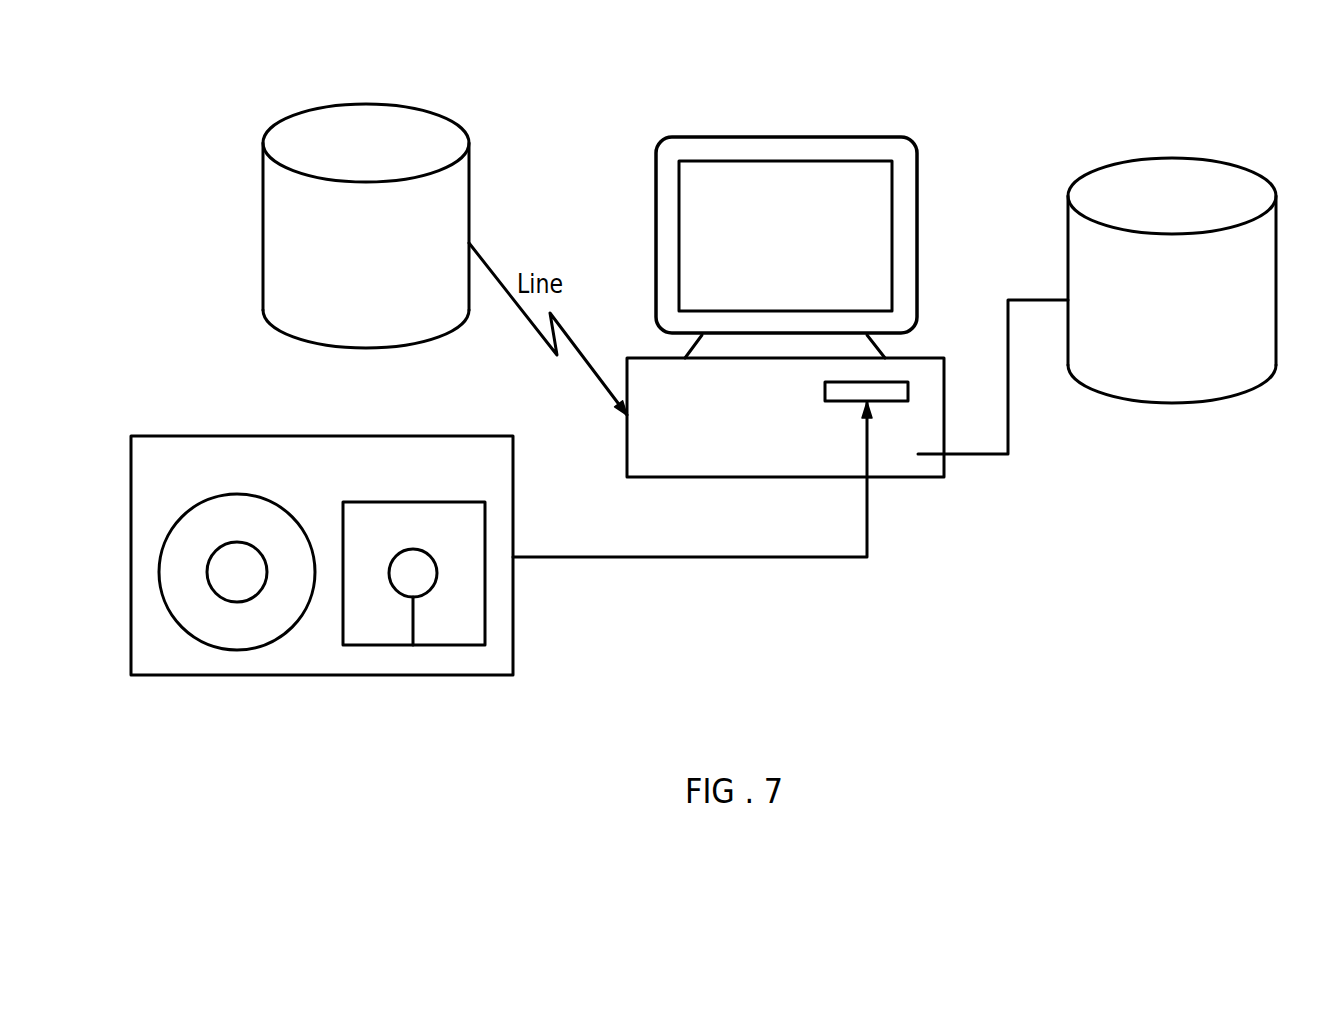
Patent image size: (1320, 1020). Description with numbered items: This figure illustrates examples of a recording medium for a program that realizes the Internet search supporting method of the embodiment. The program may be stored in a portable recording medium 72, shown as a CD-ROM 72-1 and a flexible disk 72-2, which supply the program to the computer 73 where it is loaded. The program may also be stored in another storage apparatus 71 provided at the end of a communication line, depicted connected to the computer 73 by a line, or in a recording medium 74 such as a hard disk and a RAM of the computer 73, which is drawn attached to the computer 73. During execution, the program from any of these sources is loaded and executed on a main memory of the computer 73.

The storage apparatus 71 is at (424, 112).
The portable recording medium 72 is at (322, 517).
The CD-ROM 72-1 is at (234, 549).
The flexible disk 72-2 is at (416, 546).
The computer 73 is at (857, 137).
The recording medium 74 is at (1228, 160).